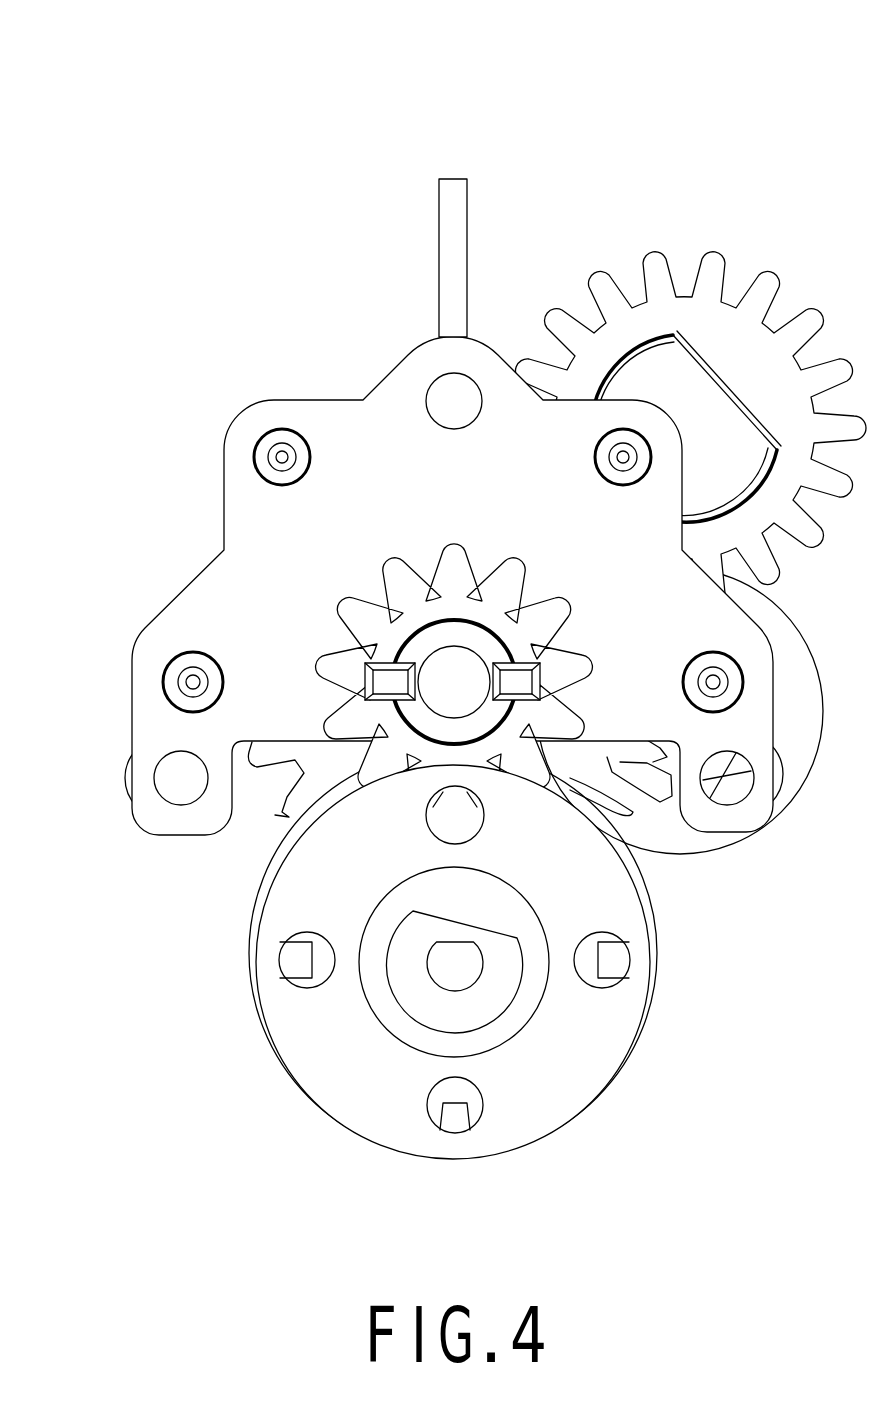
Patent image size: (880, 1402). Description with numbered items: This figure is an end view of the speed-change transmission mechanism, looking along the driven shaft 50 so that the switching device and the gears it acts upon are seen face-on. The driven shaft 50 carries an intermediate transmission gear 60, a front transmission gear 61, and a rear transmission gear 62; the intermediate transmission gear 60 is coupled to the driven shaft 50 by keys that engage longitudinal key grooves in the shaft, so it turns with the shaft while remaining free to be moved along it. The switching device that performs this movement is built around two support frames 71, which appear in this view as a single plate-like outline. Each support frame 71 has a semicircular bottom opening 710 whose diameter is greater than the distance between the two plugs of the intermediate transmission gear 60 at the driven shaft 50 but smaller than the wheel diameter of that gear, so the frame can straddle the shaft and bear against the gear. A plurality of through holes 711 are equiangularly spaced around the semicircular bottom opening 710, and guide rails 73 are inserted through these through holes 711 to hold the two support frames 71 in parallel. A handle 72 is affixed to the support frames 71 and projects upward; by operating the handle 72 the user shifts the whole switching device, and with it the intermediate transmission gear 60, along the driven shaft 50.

The driven shaft 50 is at (457, 660).
The intermediate transmission gear 60 is at (580, 803).
The front transmission gear 61 is at (300, 806).
The rear transmission gear 62 is at (395, 568).
The support frame 71 is at (341, 416).
The semicircular bottom opening 710 is at (365, 688).
The through hole 711 is at (287, 430).
The handle 72 is at (452, 183).
The guide rail 73 is at (280, 458).